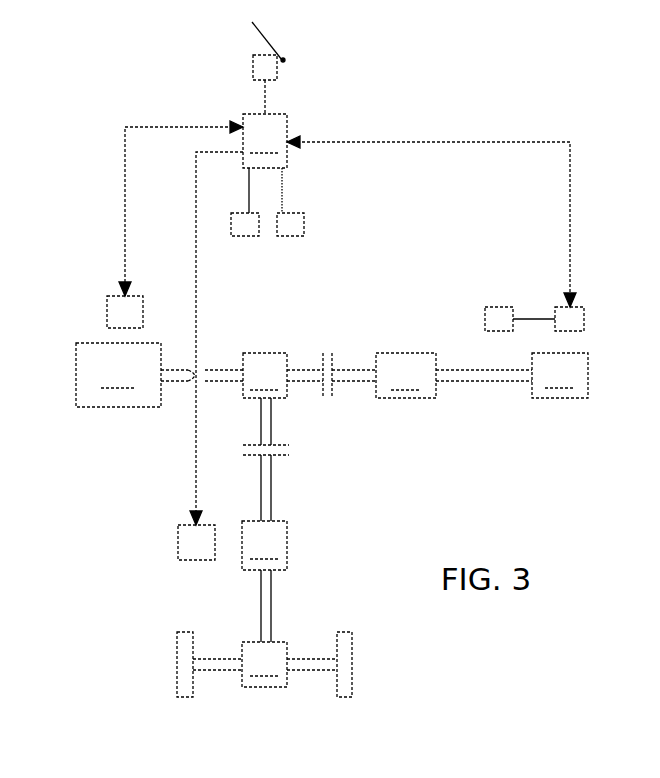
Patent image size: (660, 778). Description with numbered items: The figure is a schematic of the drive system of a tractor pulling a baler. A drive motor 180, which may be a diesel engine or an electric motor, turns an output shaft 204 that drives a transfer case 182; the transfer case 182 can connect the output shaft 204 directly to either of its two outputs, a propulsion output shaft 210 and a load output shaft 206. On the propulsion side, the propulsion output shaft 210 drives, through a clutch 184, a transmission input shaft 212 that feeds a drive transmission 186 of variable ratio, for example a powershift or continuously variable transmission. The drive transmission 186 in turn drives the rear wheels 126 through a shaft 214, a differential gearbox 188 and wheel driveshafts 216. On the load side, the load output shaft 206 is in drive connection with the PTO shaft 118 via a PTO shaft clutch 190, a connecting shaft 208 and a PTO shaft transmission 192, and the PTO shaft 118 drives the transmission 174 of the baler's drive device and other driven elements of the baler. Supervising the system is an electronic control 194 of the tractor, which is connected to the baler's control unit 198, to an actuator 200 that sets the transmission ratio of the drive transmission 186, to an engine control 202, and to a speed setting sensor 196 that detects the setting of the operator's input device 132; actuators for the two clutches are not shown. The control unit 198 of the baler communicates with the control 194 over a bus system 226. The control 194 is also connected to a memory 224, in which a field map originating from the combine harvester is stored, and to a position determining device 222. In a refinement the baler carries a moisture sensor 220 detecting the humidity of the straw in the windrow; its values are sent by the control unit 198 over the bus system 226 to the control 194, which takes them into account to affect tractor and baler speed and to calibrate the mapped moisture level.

The PTO shaft 118 is at (487, 377).
The rear wheels 126 is at (182, 682).
The input device 132 is at (270, 43).
The transmission 174 is at (560, 375).
The drive motor 180 is at (118, 375).
The transfer case 182 is at (265, 375).
The clutch 184 is at (280, 450).
The drive transmission 186 is at (264, 545).
The differential gearbox 188 is at (264, 664).
The PTO shaft clutch 190 is at (328, 360).
The PTO shaft transmission 192 is at (406, 375).
The electronic control 194 is at (265, 141).
The speed setting sensor 196 is at (272, 68).
The control unit 198 is at (575, 318).
The actuator 200 is at (195, 539).
The engine control 202 is at (115, 312).
The output shaft 204 is at (177, 375).
The load output shaft 206 is at (307, 370).
The shaft 208 is at (355, 375).
The propulsion output shaft 210 is at (266, 427).
The transmission input shaft 212 is at (266, 490).
The shaft 214 is at (266, 612).
The wheel driveshafts 216 is at (216, 664).
The moisture sensor 220 is at (497, 320).
The position determining device 222 is at (244, 223).
The memory 224 is at (292, 226).
The bus system 226 is at (495, 142).